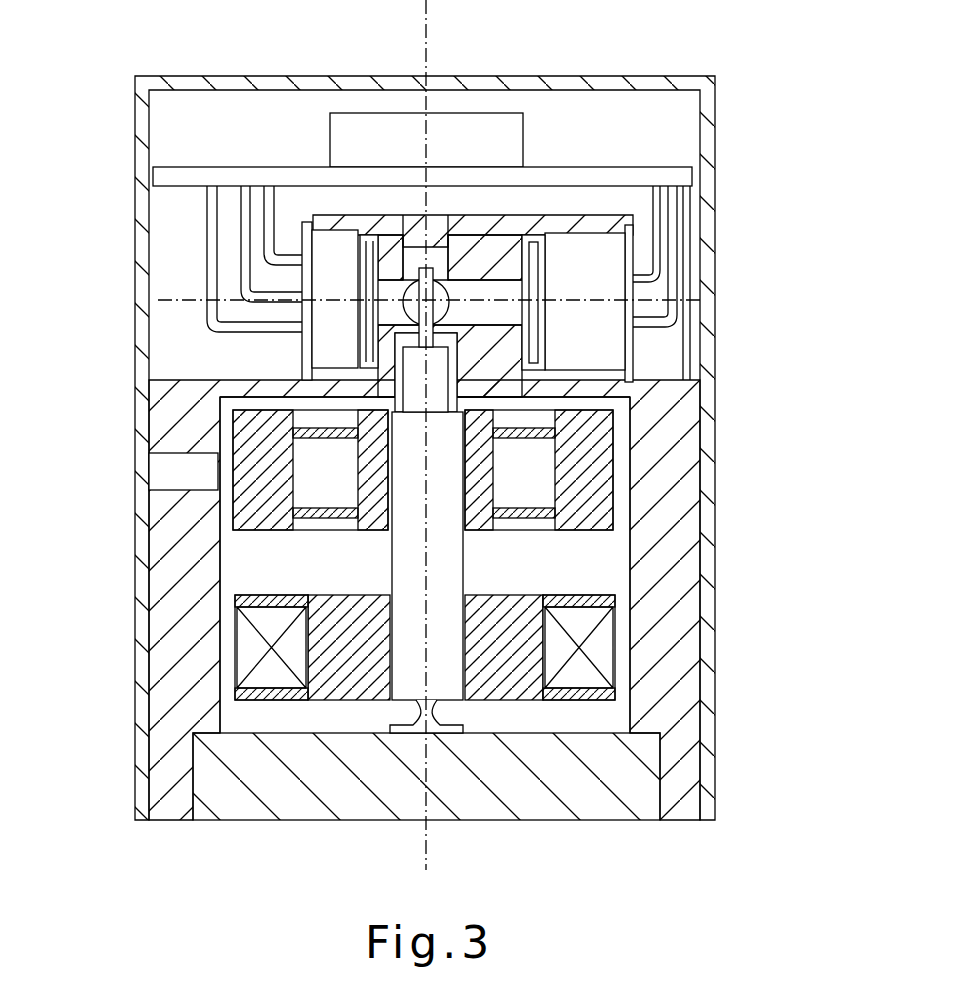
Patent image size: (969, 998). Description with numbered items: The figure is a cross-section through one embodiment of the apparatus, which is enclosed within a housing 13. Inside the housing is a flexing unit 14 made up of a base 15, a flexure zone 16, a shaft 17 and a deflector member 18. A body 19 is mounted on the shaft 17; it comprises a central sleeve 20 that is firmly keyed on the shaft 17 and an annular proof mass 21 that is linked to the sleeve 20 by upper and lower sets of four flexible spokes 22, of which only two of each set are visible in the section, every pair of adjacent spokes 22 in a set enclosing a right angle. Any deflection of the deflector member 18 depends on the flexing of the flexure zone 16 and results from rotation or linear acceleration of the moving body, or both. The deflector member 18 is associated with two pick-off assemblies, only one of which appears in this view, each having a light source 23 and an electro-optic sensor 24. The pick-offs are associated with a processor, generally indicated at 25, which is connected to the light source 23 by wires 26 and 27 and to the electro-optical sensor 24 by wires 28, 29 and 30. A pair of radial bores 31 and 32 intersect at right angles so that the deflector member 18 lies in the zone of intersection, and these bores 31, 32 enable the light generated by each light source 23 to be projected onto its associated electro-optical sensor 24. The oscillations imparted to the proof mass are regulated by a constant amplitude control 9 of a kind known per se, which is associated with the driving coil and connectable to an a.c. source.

The constant amplitude control 9 is at (170, 469).
The housing 13 is at (707, 522).
The flexing unit 14 is at (576, 563).
The base 15 is at (327, 810).
The flexure zone 16 is at (420, 716).
The shaft 17 is at (450, 565).
The deflector member 18 is at (415, 245).
The body 19 is at (640, 468).
The central sleeve 20 is at (377, 517).
The annular proof mass 21 is at (258, 517).
The flexible spokes 22 is at (313, 432).
The light source 23 is at (582, 347).
The electro-optic sensor 24 is at (327, 348).
The processor 25 is at (465, 128).
The wire 26 is at (658, 205).
The wire 27 is at (672, 257).
The wire 28 is at (208, 241).
The wire 29 is at (327, 288).
The wire 30 is at (207, 195).
The radial bore 31 is at (482, 287).
The radial bore 32 is at (393, 290).